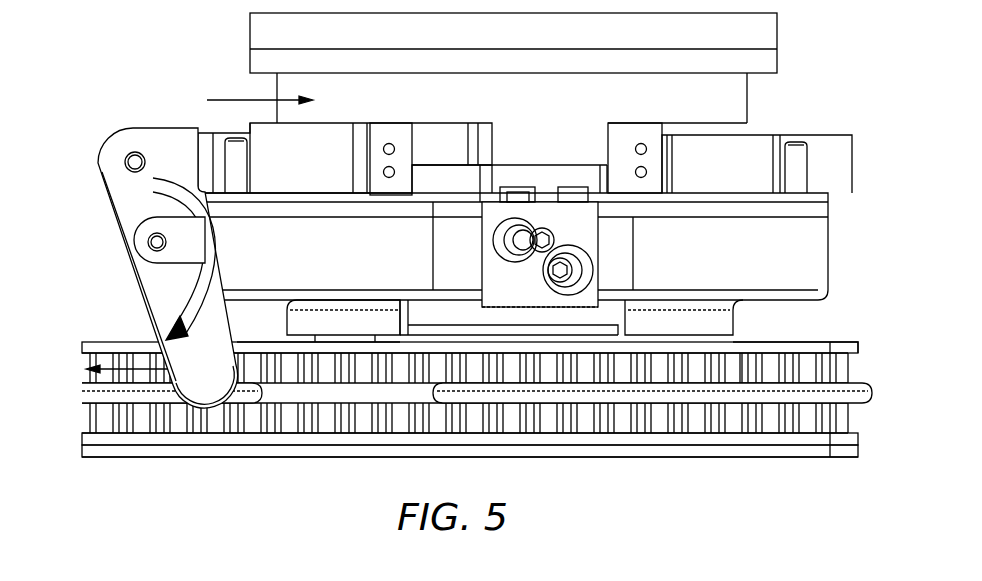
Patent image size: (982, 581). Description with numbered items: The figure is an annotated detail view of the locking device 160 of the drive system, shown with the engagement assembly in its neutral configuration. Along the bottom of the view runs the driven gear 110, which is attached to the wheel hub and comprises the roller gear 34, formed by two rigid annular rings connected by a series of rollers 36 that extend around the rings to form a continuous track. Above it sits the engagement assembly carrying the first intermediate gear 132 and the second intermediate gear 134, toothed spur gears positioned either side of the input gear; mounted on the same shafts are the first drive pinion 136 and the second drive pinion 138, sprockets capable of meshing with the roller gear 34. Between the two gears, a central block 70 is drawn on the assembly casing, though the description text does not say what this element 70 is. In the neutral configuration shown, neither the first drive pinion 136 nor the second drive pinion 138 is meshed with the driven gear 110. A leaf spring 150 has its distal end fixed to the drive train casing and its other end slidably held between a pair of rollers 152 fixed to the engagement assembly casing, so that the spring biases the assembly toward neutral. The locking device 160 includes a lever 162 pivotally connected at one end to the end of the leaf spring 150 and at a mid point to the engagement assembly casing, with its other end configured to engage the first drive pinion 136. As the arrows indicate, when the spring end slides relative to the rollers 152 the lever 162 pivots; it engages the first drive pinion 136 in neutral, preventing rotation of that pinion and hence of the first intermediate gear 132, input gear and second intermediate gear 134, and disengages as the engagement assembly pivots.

The leaf spring 150 is at (337, 128).
The roller 152 is at (233, 158).
The first intermediate gear 132 is at (378, 237).
The clamp block 70 is at (572, 215).
The second intermediate gear 134 is at (817, 252).
The locking device 160 is at (97, 239).
The lever 162 is at (157, 289).
The roller 36 is at (82, 358).
The second drive pinion 138 is at (748, 367).
The first drive pinion 136 is at (317, 423).
The driven gear 110 is at (123, 440).
The roller gear 34 is at (470, 477).